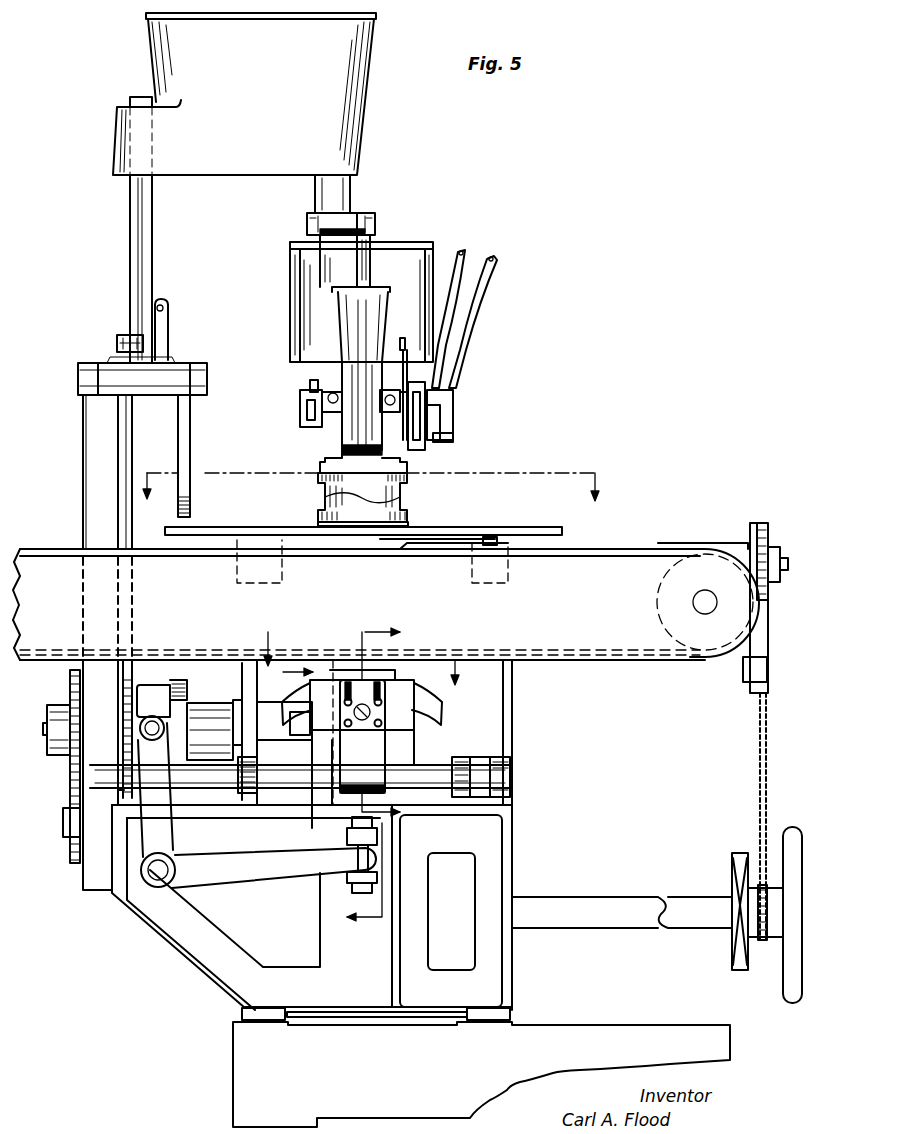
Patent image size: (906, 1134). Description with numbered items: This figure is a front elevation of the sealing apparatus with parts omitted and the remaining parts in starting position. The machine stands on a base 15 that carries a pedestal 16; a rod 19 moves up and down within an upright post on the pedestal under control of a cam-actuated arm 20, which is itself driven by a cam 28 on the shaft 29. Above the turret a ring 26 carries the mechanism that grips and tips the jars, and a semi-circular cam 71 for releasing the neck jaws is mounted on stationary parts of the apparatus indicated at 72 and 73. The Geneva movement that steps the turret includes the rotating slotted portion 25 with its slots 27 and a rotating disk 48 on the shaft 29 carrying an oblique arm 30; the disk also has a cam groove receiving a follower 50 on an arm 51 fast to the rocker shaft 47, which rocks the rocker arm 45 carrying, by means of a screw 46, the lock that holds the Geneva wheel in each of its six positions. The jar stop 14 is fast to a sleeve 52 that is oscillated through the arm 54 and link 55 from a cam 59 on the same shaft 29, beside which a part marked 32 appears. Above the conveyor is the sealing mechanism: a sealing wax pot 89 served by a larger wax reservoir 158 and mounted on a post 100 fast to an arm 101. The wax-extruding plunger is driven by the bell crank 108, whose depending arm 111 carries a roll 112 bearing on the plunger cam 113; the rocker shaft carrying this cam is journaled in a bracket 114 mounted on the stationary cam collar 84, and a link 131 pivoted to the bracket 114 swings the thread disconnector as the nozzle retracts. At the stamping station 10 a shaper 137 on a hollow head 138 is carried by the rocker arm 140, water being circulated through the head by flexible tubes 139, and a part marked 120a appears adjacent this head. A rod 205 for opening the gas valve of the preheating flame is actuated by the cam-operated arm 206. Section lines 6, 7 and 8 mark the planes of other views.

The wax reservoir 158 is at (244, 94).
The bell crank 108 is at (343, 225).
The sealing wax pot 89 is at (361, 302).
The depending arm 111 is at (320, 278).
The post 100 is at (358, 270).
The arm 101 is at (345, 430).
The cam 113 is at (310, 387).
The roll 112 is at (307, 413).
The bracket 114 is at (320, 467).
The stationary cam collar 84 is at (408, 483).
The flexible tubes 139 is at (491, 256).
The bracket 120a is at (405, 347).
The hollow head 138 is at (440, 400).
The rocker arm 140 is at (455, 417).
The shaper 137 is at (455, 438).
The rod 205 is at (164, 302).
The cam operated arm 206 is at (165, 327).
The arm 54 is at (128, 336).
The sleeve 52 is at (152, 388).
The link 55 is at (128, 462).
The jar stop 14 is at (189, 437).
The stamping station 10 is at (370, 495).
The ring 26 is at (565, 531).
The semi-circular cam 71 is at (487, 538).
The stationary part 72 is at (237, 579).
The stationary part 73 is at (520, 577).
The section line 6- 6 is at (361, 658).
The section line 7- 7 is at (326, 798).
The section line 8- 8 is at (410, 831).
The rotating slotted portion 25 is at (445, 722).
The rocker arm 45 is at (362, 736).
The screw 46 is at (363, 722).
The slots 27 is at (410, 737).
The rocker shaft 47 is at (477, 766).
The rotating disk 48 is at (247, 680).
The arm 51 is at (240, 778).
The follower 50 is at (238, 712).
The oblique arm 30 is at (284, 721).
The link 131 is at (310, 742).
The cam 28 is at (153, 688).
The shaft 29 is at (45, 728).
The disc 32 is at (68, 792).
The cam 59 is at (120, 795).
The cam-actuated arm 20 is at (290, 868).
The rod 19 is at (352, 827).
The pedestal 16 is at (510, 994).
The base 15 is at (481, 1074).